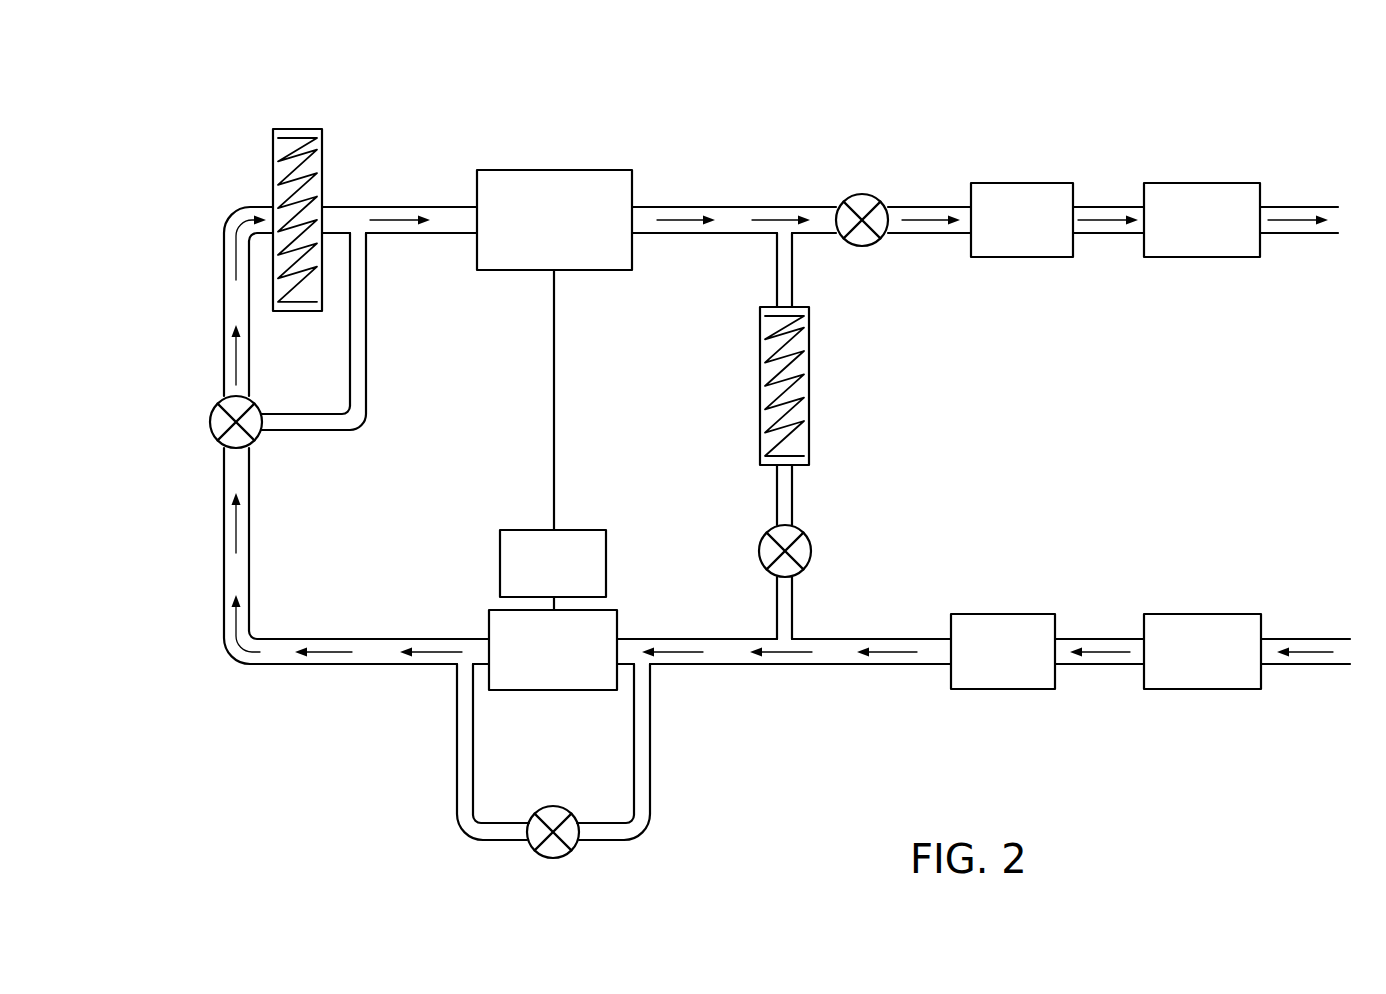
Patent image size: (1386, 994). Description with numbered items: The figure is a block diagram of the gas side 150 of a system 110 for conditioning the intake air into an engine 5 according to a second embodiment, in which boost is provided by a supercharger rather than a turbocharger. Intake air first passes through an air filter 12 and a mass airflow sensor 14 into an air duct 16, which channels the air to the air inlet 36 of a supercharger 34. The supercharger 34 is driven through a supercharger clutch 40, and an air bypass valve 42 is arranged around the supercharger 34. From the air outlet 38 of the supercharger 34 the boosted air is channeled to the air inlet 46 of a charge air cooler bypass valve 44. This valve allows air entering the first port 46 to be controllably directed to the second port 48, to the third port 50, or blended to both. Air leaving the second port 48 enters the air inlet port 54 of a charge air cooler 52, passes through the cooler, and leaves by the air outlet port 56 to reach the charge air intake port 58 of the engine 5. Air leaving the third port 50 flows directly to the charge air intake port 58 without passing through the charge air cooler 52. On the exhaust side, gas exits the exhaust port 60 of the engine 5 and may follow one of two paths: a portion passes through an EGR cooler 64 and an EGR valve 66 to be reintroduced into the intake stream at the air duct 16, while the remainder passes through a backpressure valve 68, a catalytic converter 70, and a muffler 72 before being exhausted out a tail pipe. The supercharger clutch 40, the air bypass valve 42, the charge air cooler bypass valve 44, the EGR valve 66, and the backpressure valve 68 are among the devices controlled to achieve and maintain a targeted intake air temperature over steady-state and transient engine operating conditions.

The engine 5 is at (558, 170).
The air filter 12 is at (1228, 689).
The mass airflow sensor 14 is at (1030, 689).
The air duct 16 is at (837, 664).
The supercharger 34 is at (548, 690).
The air inlet 36 is at (618, 637).
The air outlet 38 is at (488, 637).
The supercharger clutch 40 is at (588, 530).
The air bypass valve 42 is at (573, 848).
The charge air cooler bypass valve 44 is at (212, 415).
The air inlet 46 is at (225, 447).
The second port 48 is at (248, 396).
The third port 50 is at (263, 432).
The charge air cooler 52 is at (273, 148).
The air inlet port 54 is at (273, 208).
The air outlet port 56 is at (322, 200).
The charge air intake port 58 is at (477, 207).
The exhaust port 60 is at (632, 207).
The EGR cooler 64 is at (808, 405).
The EGR valve 66 is at (810, 555).
The backpressure valve 68 is at (873, 245).
The catalytic converter 70 is at (1060, 257).
The muffler 72 is at (1225, 257).
The system 110 is at (147, 75).
The gas side 150 is at (204, 127).